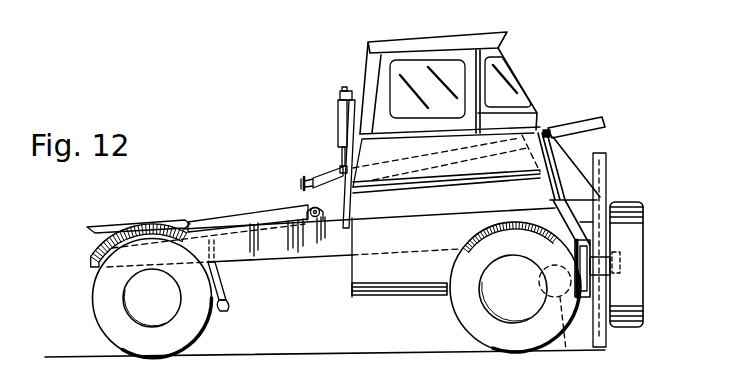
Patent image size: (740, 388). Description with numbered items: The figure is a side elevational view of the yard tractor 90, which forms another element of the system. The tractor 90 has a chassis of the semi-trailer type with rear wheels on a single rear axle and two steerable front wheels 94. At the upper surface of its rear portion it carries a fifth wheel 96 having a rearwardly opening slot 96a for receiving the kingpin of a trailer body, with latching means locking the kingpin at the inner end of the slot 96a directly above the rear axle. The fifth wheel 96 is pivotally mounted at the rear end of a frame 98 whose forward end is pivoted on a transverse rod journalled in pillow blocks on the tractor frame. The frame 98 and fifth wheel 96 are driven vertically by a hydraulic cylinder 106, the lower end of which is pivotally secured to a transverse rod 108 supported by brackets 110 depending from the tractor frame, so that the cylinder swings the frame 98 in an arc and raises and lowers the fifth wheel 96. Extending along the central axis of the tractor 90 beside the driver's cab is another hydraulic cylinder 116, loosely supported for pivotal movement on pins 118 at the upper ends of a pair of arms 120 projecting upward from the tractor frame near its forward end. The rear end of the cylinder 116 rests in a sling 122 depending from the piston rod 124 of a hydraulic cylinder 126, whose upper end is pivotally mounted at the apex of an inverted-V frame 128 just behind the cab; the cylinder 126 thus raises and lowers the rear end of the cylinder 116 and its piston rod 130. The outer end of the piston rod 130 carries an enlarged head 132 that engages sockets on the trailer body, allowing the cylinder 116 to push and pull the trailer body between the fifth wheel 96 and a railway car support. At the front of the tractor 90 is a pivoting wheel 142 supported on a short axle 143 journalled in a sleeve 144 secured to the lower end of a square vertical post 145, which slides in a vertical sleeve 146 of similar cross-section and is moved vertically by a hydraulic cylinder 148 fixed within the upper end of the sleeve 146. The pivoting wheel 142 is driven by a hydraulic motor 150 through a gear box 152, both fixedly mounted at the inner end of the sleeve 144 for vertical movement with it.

The yard tractor 90 is at (549, 82).
The steerable front wheels 94 is at (464, 324).
The fifth wheel 96 is at (170, 222).
The rearwardly opening slot 96a is at (193, 225).
The frame 98 is at (254, 216).
The hydraulic cylinder 106 is at (220, 283).
The transverse rod 108 is at (227, 307).
The brackets 110 is at (222, 263).
The hydraulic cylinder 116 is at (594, 119).
The pins 118 is at (547, 130).
The arms 120 is at (570, 151).
The sling 122 is at (340, 168).
The piston rod 124 is at (340, 148).
The hydraulic cylinder 126 is at (338, 112).
The frame 128 is at (354, 101).
The piston rod 130 is at (312, 177).
The enlarged head 132 is at (307, 185).
The pivoting wheel 142 is at (641, 240).
The short axle 143 is at (580, 298).
The sleeve 144 is at (603, 310).
The vertical post 145 is at (634, 205).
The vertical sleeve 146 is at (605, 200).
The hydraulic cylinder 148 is at (607, 172).
The hydraulic motor 150 is at (566, 351).
The gear box 152 is at (557, 212).